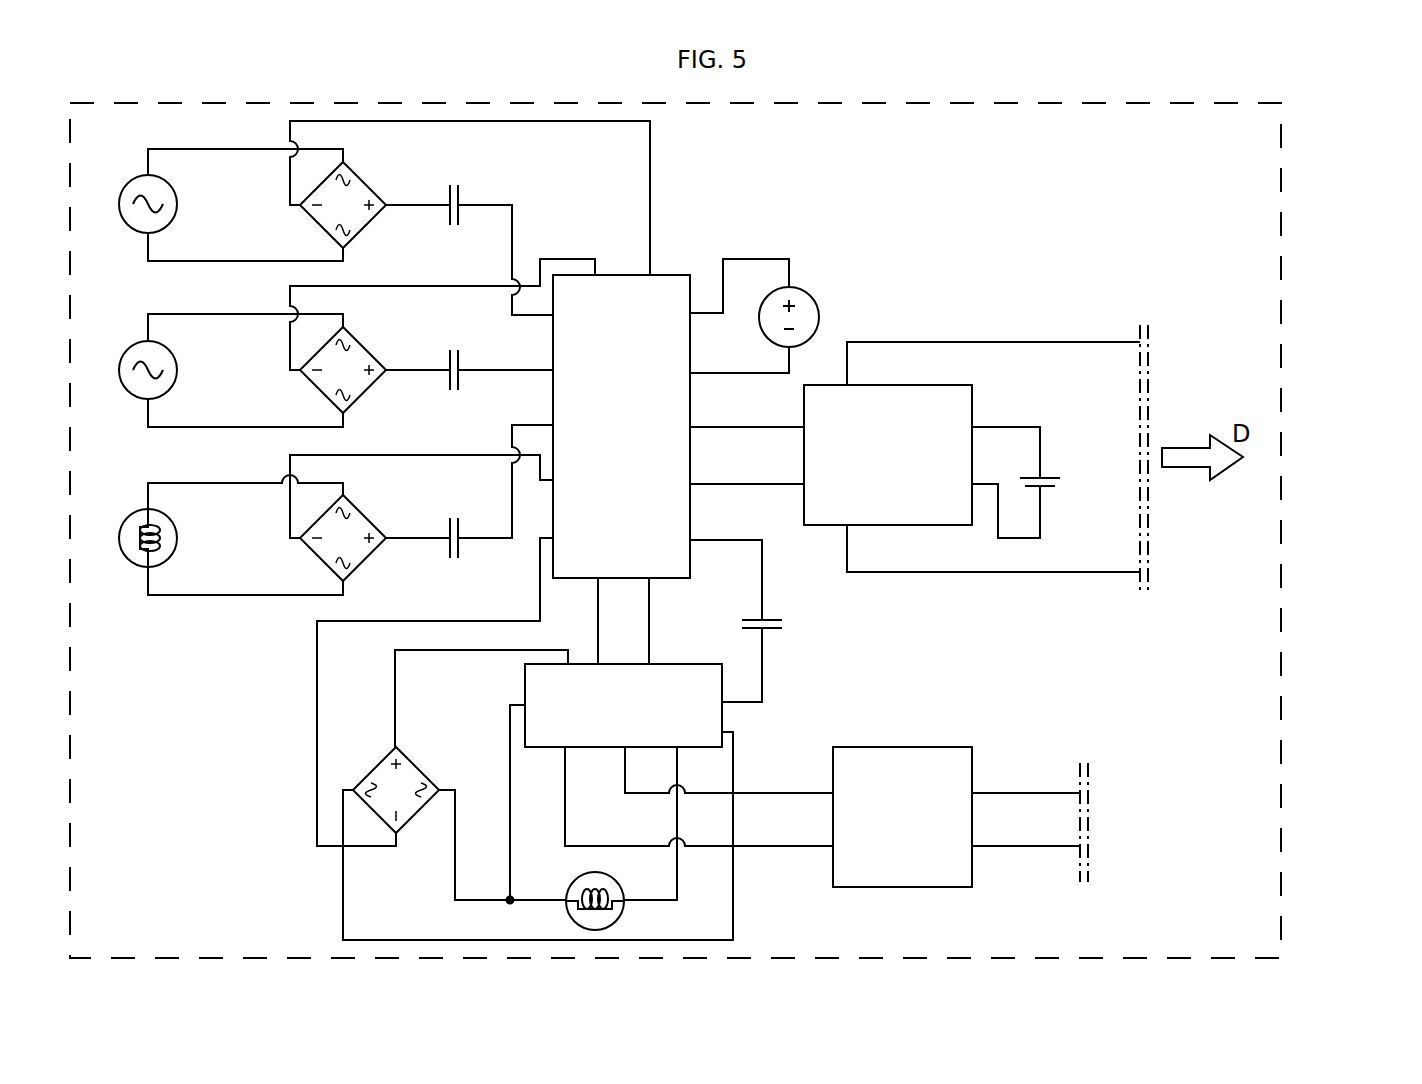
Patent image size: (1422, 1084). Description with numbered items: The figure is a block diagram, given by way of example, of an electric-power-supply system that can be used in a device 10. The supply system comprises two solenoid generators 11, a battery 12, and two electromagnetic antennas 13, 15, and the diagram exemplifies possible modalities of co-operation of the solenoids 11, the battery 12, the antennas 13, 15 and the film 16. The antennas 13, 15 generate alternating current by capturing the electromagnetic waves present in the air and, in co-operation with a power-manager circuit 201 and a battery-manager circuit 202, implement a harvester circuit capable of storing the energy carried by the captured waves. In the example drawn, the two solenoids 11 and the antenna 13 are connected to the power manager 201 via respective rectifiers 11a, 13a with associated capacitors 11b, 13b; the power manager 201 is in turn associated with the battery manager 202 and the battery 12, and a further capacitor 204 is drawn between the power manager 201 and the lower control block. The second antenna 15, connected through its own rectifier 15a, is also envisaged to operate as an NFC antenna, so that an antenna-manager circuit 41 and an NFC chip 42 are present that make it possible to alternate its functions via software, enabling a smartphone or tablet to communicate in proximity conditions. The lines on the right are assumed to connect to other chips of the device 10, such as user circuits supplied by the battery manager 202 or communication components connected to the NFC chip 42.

The device 10 is at (1240, 670).
The solenoid generator 11 is at (121, 198).
The rectifier 11a is at (365, 190).
The capacitor 11b is at (462, 195).
The antenna 13 is at (122, 545).
The rectifier 13a is at (358, 556).
The capacitor 13b is at (448, 527).
The power-manager circuit 201 is at (668, 285).
The film 16 is at (810, 310).
The battery-manager circuit 202 is at (935, 388).
The battery 12 is at (1045, 478).
The capacitor 204 is at (770, 620).
The antenna-manager circuit 41 is at (708, 703).
The NFC chip 42 is at (930, 760).
The rectifier circuit 15a is at (415, 770).
The second antenna 15 is at (620, 912).